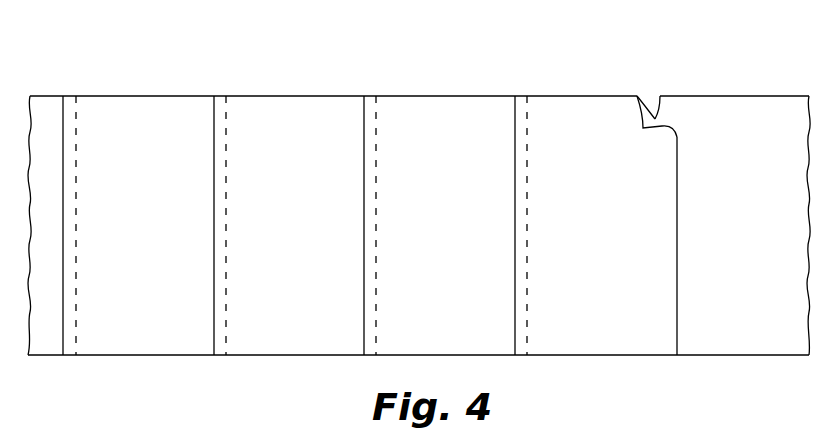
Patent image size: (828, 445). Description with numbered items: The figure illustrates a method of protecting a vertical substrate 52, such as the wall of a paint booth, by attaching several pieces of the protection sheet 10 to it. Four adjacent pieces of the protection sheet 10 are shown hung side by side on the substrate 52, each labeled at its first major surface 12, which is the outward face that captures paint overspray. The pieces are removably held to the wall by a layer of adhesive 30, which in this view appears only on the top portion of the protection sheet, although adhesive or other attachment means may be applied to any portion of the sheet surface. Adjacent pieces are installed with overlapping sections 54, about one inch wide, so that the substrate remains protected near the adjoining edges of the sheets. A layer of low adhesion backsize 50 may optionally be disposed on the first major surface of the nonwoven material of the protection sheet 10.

The protection sheet 10 is at (393, 92).
The first major surface 12 is at (139, 186).
The layer of pressure sensitive adhesive 30 is at (650, 119).
The layer of low adhesion backsize 50 is at (580, 54).
The vertical substrate 52 is at (738, 332).
The overlapping sections 54 is at (70, 100).